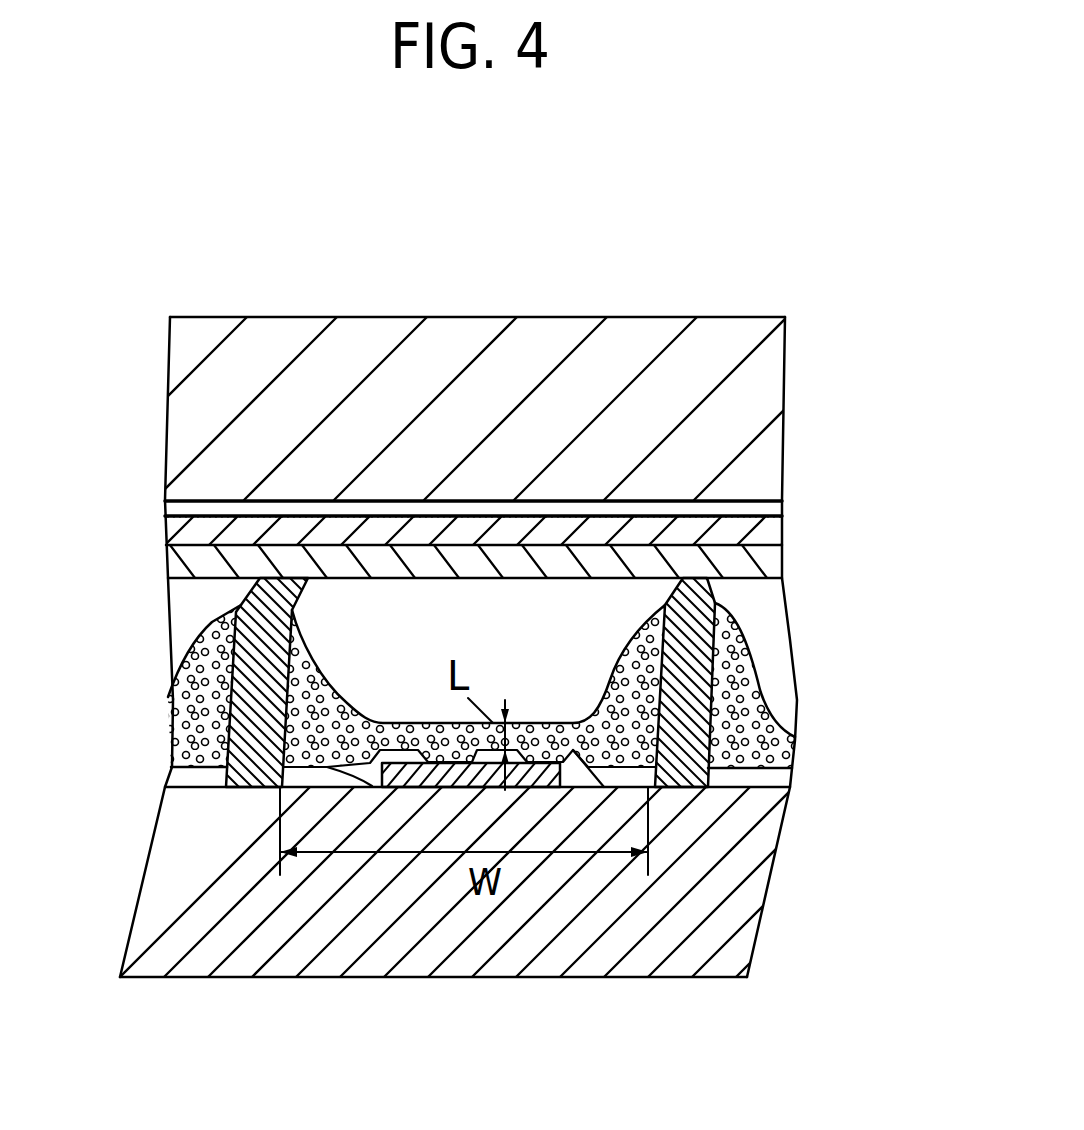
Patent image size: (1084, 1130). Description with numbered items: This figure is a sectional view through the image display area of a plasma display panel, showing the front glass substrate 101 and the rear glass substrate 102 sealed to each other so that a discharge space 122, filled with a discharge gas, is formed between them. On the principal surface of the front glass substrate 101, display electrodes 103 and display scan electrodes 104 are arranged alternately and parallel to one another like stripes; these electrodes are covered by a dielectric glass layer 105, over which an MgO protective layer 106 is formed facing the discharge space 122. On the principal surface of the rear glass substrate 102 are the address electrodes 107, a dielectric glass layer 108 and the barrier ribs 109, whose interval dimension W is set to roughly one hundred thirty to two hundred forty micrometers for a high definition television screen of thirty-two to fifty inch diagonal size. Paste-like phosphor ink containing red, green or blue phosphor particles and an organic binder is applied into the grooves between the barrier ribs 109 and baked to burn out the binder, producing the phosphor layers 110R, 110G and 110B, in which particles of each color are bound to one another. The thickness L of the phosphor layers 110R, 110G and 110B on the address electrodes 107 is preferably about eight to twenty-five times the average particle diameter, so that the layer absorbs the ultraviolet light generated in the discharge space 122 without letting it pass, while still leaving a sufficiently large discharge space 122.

The front glass substrate 101 is at (770, 403).
The rear glass substrate 102 is at (757, 877).
The display electrodes 103 is at (555, 493).
The display scan electrodes 104 is at (790, 510).
The dielectric glass layer 105 is at (790, 535).
The MgO protective layer 106 is at (790, 567).
The address electrodes 107 is at (385, 779).
The dielectric glass layer 108 is at (441, 829).
The barrier ribs 109 is at (466, 500).
The phosphor layer (red) 110R is at (177, 697).
The phosphor layer (green) 110G is at (575, 750).
The phosphor layer (blue) 110B is at (773, 733).
The discharge space 122 is at (600, 645).